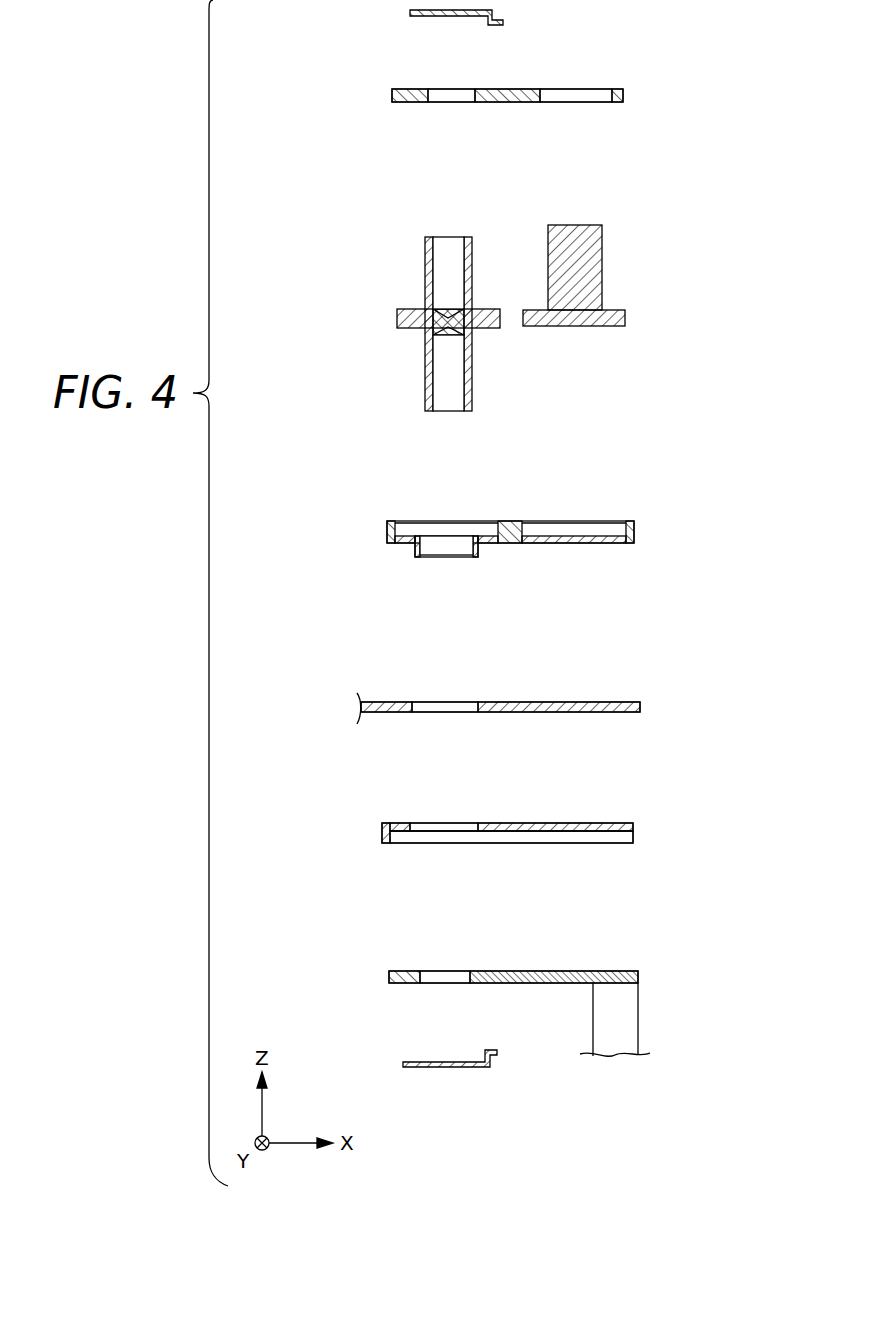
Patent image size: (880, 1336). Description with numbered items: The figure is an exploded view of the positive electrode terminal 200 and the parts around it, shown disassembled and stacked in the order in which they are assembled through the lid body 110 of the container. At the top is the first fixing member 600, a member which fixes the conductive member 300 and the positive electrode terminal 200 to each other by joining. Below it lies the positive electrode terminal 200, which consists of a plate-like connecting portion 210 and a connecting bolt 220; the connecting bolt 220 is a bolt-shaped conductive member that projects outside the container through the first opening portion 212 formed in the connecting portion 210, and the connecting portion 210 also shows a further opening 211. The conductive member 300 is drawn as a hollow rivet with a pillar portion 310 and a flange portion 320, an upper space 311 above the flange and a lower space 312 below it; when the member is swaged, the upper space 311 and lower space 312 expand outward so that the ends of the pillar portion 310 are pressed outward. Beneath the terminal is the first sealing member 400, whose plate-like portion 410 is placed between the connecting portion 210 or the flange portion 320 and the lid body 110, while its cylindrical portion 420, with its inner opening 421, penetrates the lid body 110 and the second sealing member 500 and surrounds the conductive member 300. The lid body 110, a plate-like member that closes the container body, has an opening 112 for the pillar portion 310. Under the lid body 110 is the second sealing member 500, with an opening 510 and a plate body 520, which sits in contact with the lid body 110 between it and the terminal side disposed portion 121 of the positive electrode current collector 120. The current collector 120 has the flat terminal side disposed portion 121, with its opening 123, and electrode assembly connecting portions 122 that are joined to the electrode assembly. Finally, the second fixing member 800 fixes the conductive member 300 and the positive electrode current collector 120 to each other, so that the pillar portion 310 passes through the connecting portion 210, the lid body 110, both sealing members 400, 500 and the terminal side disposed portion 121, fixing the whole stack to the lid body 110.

The first fixing member 600 is at (410, 13).
The positive electrode terminal 200 is at (592, 188).
The connecting portion 210 is at (562, 99).
The first opening 211 is at (432, 95).
The first opening portion 212 is at (545, 95).
The connecting bolt 220 is at (628, 274).
The conductive member 300 is at (384, 310).
The pillar portion 310 is at (419, 310).
The upper space 311 is at (458, 262).
The lower space 312 is at (455, 376).
The flange portion 320 is at (398, 321).
The first sealing member 400 is at (539, 546).
The plate-like portion 410 is at (390, 545).
The cylindrical portion 420 is at (474, 575).
The recess 421 is at (466, 552).
The lid body 110 is at (554, 680).
The substrate opening 112 is at (420, 703).
The second sealing member 500 is at (564, 842).
The plate opening 510 is at (418, 828).
The plate body 520 is at (405, 838).
The positive electrode current collector 120 is at (574, 992).
The terminal side disposed portion 121 is at (525, 977).
The electrode assembly connecting portion 122 is at (605, 1018).
The frame opening 123 is at (423, 977).
The second fixing member 800 is at (403, 1065).